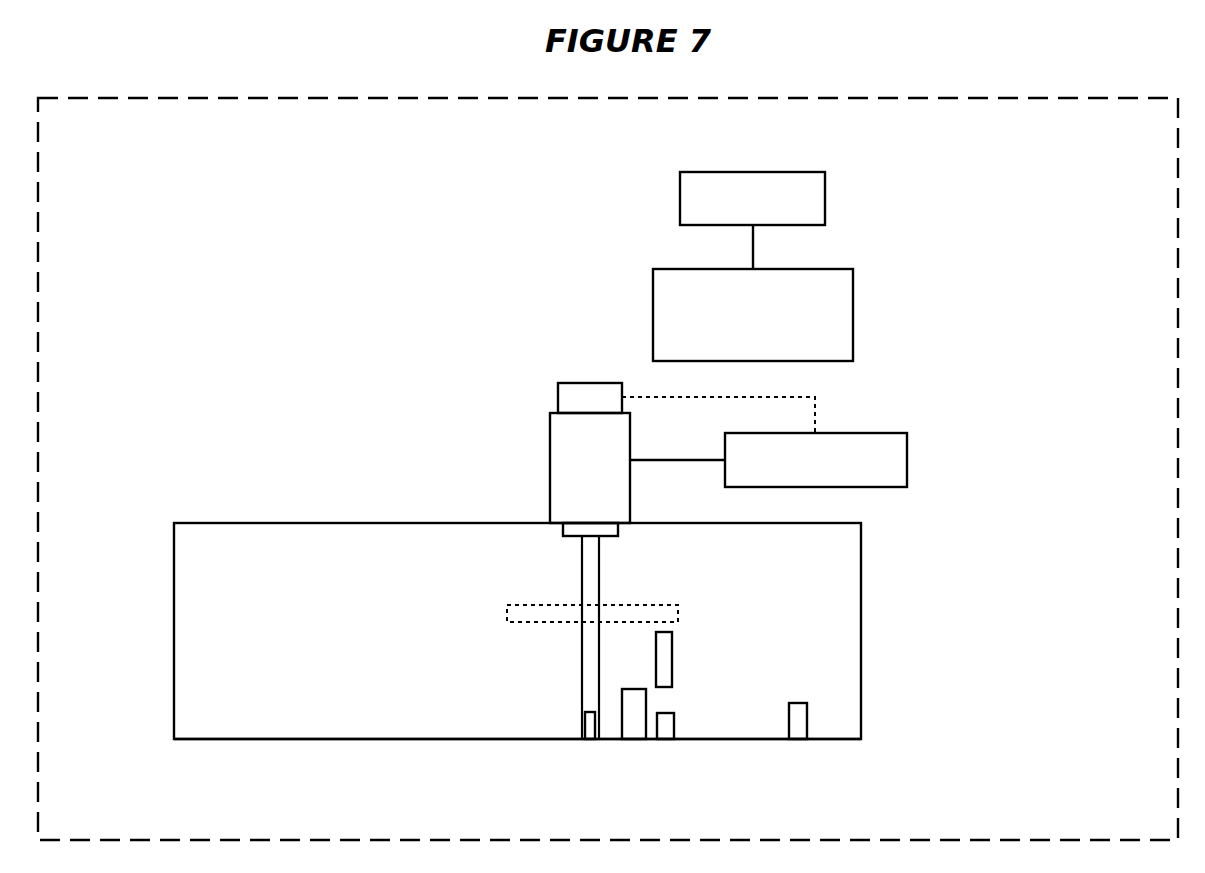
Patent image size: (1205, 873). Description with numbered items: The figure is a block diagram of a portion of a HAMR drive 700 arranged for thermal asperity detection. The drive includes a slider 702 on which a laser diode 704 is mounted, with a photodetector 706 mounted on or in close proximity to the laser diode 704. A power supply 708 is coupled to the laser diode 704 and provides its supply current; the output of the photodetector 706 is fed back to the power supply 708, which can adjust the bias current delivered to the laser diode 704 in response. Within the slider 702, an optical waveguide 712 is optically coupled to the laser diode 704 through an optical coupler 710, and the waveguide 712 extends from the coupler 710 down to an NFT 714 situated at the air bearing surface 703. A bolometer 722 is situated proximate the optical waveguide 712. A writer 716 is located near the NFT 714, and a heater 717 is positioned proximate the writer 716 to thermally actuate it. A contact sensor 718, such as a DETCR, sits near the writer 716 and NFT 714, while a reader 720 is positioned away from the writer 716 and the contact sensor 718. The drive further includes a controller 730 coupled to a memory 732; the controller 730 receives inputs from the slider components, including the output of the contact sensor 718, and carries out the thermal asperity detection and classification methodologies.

The HAMR drive 700 is at (1068, 98).
The slider 702 is at (861, 600).
The air bearing surface 703 is at (410, 740).
The laser diode 704 is at (550, 432).
The photodetector 706 is at (572, 383).
The power supply 708 is at (880, 433).
The optical coupler 710 is at (605, 537).
The optical waveguide 712 is at (581, 665).
The NFT 714 is at (591, 741).
The writer 716 is at (635, 741).
The heater 717 is at (672, 655).
The contact sensor 718 is at (667, 741).
The reader 720 is at (798, 741).
The bolometer 722 is at (655, 603).
The controller 730 is at (825, 269).
The memory 732 is at (825, 193).